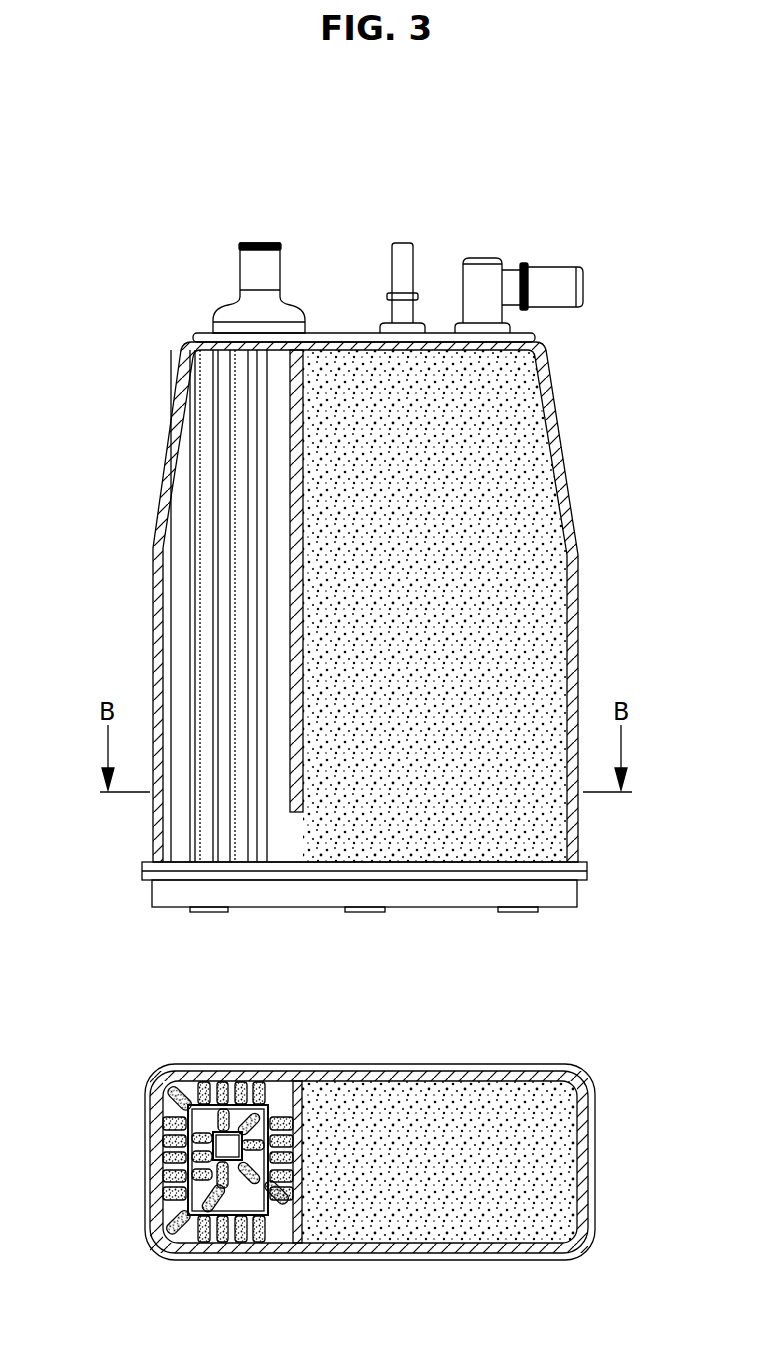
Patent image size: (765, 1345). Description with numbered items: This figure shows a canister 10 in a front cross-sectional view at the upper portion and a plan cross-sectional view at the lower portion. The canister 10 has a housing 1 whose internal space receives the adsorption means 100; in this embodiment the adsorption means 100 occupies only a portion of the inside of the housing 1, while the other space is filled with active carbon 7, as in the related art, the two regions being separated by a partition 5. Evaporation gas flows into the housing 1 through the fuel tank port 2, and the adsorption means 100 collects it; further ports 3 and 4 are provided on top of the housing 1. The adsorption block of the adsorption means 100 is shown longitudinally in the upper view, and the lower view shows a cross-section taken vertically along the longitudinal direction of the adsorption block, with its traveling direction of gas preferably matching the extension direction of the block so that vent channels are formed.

The canister 10 is at (162, 182).
The housing 1 is at (560, 460).
The fuel tank port 2 is at (548, 272).
The vapor inlet port 3 is at (402, 243).
The air port 4 is at (259, 243).
The partition wall 5 is at (300, 612).
The activated carbon adsorbent 7 is at (523, 507).
The adsorption means 100 is at (205, 668).